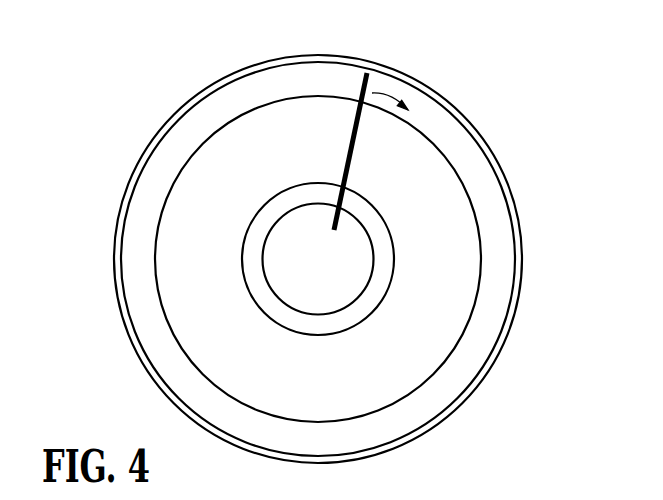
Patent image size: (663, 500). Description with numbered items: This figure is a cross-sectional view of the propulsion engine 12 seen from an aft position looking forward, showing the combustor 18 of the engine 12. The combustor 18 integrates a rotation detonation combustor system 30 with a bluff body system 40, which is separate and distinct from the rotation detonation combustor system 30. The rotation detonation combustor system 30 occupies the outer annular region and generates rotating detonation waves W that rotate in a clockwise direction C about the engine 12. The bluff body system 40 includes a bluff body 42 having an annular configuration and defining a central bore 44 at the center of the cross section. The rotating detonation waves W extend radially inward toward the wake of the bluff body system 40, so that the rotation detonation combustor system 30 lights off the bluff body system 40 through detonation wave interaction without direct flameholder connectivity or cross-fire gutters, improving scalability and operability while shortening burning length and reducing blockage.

The combustor 18 is at (523, 190).
The engine 12 is at (515, 315).
The rotation detonation combustor (RDC) system 30 is at (320, 68).
The bluff body system 40 is at (253, 222).
The bluff body 42 is at (248, 272).
The central bore 44 is at (342, 275).
The rotating detonation waves W is at (353, 155).
The clockwise direction C is at (372, 92).